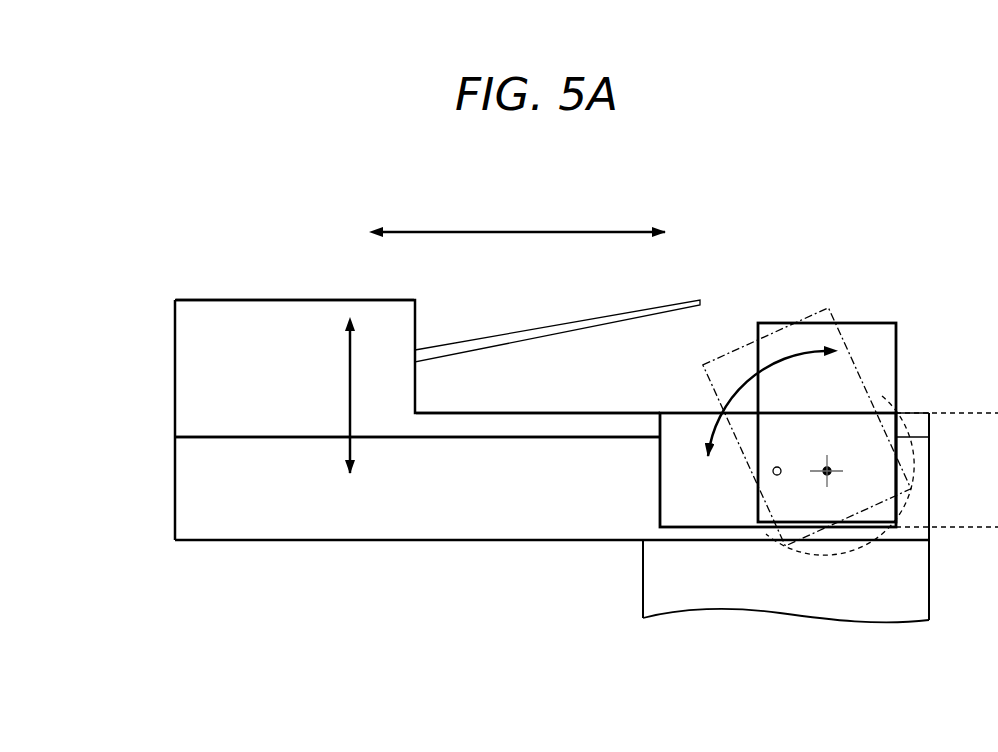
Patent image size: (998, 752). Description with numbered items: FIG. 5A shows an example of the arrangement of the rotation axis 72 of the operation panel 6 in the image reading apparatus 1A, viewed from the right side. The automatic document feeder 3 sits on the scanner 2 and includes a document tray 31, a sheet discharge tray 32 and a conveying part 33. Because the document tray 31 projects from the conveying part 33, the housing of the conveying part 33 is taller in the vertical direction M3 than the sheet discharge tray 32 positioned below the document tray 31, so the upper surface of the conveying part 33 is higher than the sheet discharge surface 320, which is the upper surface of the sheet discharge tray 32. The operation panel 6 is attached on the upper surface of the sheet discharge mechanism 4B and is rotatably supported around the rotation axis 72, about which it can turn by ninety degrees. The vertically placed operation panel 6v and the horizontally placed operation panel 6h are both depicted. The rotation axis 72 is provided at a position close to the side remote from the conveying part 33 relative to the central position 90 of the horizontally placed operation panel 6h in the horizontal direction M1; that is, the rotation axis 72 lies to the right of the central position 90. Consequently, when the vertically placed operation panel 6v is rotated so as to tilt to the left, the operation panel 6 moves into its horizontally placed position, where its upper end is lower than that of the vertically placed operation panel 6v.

The image reading apparatus 1A is at (640, 160).
The scanner 2 is at (170, 437).
The automatic document feeder 3 is at (170, 300).
The document tray 31 is at (447, 345).
The sheet discharge tray 32 is at (478, 426).
The conveying part 33 is at (298, 312).
The sheet discharge surface 320 is at (512, 412).
The operation panel 6 is at (780, 431).
The operation panel (horizontally placed) 6h is at (660, 486).
The operation panel (vertically placed) 6v is at (897, 357).
The rotation axis 72 is at (831, 468).
The central position 90 is at (780, 466).
The sheet discharge mechanism 4B is at (643, 591).
The horizontal direction M1 is at (523, 217).
The vertical direction M3 is at (331, 401).